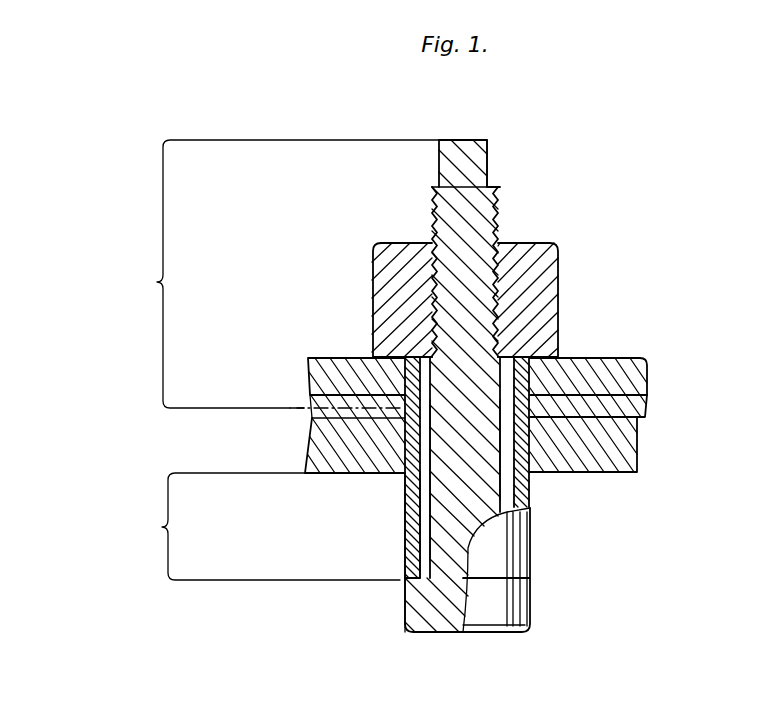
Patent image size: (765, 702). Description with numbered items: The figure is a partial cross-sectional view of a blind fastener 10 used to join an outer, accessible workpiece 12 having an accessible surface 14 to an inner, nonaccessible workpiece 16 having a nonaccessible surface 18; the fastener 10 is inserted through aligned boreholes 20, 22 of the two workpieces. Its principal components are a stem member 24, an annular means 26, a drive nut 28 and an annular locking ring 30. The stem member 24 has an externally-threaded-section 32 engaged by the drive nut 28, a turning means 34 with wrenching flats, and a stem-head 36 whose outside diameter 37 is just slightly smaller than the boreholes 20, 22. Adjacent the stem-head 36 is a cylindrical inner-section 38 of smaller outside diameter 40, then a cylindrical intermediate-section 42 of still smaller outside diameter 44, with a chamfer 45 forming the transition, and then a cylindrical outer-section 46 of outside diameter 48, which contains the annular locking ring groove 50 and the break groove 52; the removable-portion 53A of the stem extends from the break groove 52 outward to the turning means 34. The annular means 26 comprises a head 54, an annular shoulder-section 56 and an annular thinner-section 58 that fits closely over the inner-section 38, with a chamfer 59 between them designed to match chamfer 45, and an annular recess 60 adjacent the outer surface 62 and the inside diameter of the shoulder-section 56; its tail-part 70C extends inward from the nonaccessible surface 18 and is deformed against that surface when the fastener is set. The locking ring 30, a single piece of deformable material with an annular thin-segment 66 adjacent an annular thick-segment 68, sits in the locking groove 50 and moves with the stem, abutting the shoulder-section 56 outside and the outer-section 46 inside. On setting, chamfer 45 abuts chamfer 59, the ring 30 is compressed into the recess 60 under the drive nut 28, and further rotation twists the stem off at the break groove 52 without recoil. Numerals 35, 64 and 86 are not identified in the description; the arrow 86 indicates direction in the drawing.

The fastener 10 is at (630, 250).
The outer and accessible workpiece 12 is at (640, 357).
The accessible surface 14 is at (316, 358).
The inner or nonaccessible workpiece 16 is at (310, 474).
The nonaccessible surface 18 is at (640, 472).
The borehole 20 is at (407, 400).
The borehole 22 is at (405, 432).
The stem member 24 is at (462, 205).
The annular means 26 is at (400, 548).
The drive nut 28 is at (478, 368).
The annular locking ring 30 is at (408, 478).
The externally-threaded-section 32 is at (506, 196).
The turning means 34 is at (492, 150).
The head portion 35 is at (460, 158).
The stem-head 36 is at (505, 598).
The outside diameter of stem-head 37 is at (530, 622).
The cylindrical inner-section 38 is at (443, 560).
The outside diameter of inner-section 40 is at (405, 578).
The cylindrical intermediate-section 42 is at (505, 555).
The outside diameter of intermediate-section 44 is at (533, 472).
The chamfer 45 is at (528, 483).
The cylindrical outer-section 46 is at (548, 330).
The outside diameter of outer-section 48 is at (413, 397).
The annular locking ring groove 50 is at (465, 480).
The break groove 52 is at (428, 403).
The removable-portion 53A is at (263, 274).
The head 54 is at (533, 363).
The annular shoulder-section 56 is at (527, 412).
The annular thinner-section 58 is at (403, 520).
The chamfer 59 is at (513, 442).
The annular recess 60 is at (423, 357).
The outer surface 62 is at (407, 358).
The sleeve rim 64 is at (437, 360).
The annular thin-segment 66 is at (525, 410).
The annular thick-segment 68 is at (513, 428).
The tail-part 70C is at (250, 526).
The load direction 86 is at (380, 636).